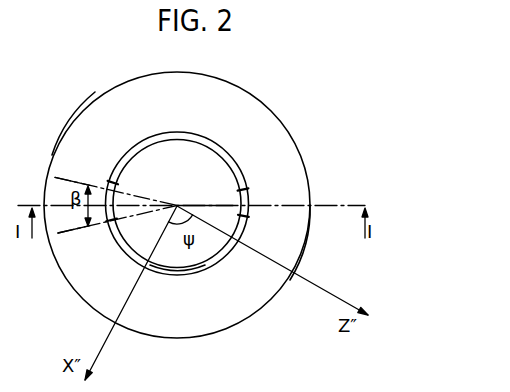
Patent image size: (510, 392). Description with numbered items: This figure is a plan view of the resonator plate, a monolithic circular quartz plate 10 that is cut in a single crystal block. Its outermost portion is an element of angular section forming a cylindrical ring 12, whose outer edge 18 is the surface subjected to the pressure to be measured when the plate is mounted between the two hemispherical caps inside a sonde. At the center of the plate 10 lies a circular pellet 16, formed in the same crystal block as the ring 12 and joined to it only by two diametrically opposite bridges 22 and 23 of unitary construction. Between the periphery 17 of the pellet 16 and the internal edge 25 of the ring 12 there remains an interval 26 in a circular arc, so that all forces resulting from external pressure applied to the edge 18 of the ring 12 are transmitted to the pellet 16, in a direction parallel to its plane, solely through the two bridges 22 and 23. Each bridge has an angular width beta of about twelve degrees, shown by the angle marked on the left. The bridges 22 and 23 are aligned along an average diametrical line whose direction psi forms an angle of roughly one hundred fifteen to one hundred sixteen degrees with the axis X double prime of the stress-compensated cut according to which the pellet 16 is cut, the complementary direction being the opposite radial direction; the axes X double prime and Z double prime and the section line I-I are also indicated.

The monolithic circular quartz plate 10 is at (55, 130).
The ring 12 is at (97, 117).
The pellet 16 is at (173, 157).
The interval 26 is at (213, 143).
The bridge 22 is at (110, 185).
The bridge 23 is at (247, 198).
The outer edge 18 is at (308, 231).
The internal edge 25 is at (123, 251).
The periphery 17 is at (185, 268).